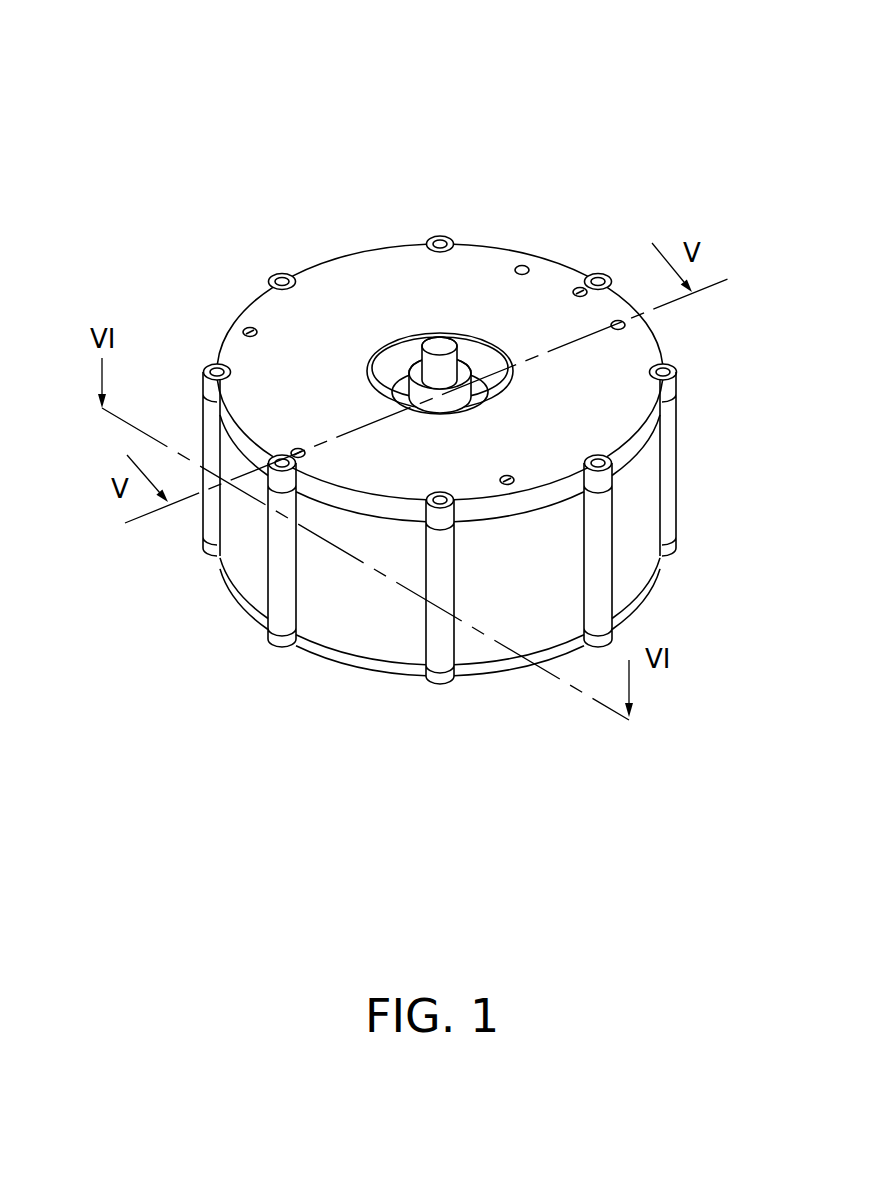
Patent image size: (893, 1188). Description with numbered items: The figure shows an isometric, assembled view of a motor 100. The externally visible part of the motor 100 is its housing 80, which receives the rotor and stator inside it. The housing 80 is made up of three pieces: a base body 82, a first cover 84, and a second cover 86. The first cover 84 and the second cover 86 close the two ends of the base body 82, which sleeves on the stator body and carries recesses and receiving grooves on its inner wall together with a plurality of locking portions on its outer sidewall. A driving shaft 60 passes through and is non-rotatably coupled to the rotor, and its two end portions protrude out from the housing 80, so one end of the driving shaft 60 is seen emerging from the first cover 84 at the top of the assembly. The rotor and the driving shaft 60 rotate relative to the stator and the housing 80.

The motor 100 is at (483, 44).
The driving shaft 60 is at (447, 337).
The housing 80 is at (766, 477).
The first cover 84 is at (632, 450).
The base body 82 is at (638, 518).
The second cover 86 is at (650, 592).